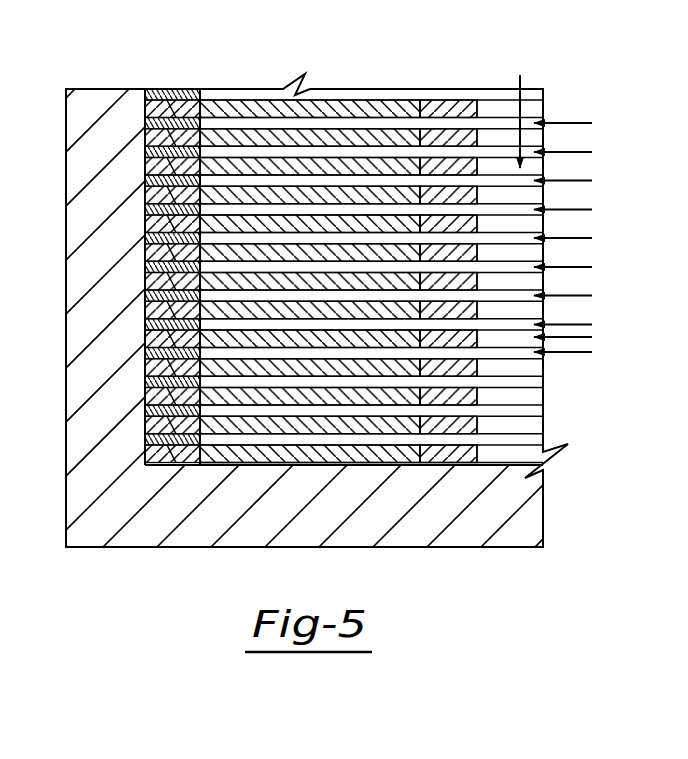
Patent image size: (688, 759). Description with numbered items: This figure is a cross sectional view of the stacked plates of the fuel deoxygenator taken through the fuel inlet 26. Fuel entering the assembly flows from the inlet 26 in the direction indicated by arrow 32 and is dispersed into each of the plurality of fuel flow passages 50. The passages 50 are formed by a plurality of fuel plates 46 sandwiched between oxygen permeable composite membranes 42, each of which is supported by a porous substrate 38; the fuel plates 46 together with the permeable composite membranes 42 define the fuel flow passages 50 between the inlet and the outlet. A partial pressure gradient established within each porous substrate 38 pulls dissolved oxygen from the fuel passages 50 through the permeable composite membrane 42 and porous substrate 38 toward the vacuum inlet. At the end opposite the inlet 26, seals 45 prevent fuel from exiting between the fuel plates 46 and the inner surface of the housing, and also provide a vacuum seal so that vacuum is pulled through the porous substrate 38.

The fuel inlet 26 is at (336, 267).
The arrow 32 is at (527, 100).
The porous substrate 38 is at (366, 433).
The oxygen permeable composite membrane 42 is at (234, 453).
The seal 45 is at (159, 455).
The fuel plate 46 is at (504, 351).
The fuel flow passage 50 is at (600, 315).